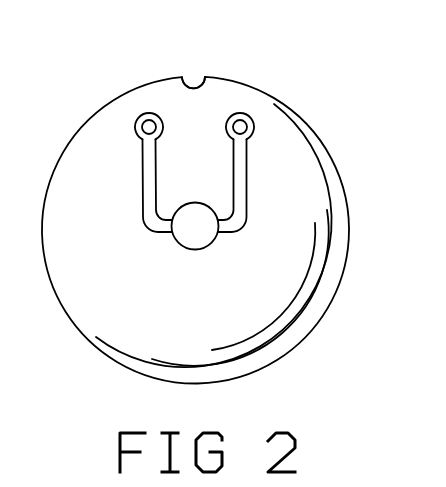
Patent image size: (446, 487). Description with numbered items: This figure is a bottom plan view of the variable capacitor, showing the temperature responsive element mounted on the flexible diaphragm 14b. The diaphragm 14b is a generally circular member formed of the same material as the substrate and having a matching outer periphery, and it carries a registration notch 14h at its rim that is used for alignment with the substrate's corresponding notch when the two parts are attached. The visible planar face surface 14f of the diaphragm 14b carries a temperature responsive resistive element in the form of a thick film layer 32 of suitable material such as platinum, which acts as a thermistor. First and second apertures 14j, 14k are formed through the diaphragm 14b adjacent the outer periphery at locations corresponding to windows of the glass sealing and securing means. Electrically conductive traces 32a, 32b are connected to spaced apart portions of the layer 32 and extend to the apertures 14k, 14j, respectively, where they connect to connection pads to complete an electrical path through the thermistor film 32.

The flexible diaphragm 14b is at (348, 227).
The planar face surface 14f is at (318, 197).
The registration notch 14h is at (200, 82).
The second aperture 14k is at (136, 122).
The first aperture 14j is at (250, 117).
The thick film layer 32 is at (195, 227).
The electrically conductive trace 32a is at (143, 182).
The electrically conductive trace 32b is at (248, 182).